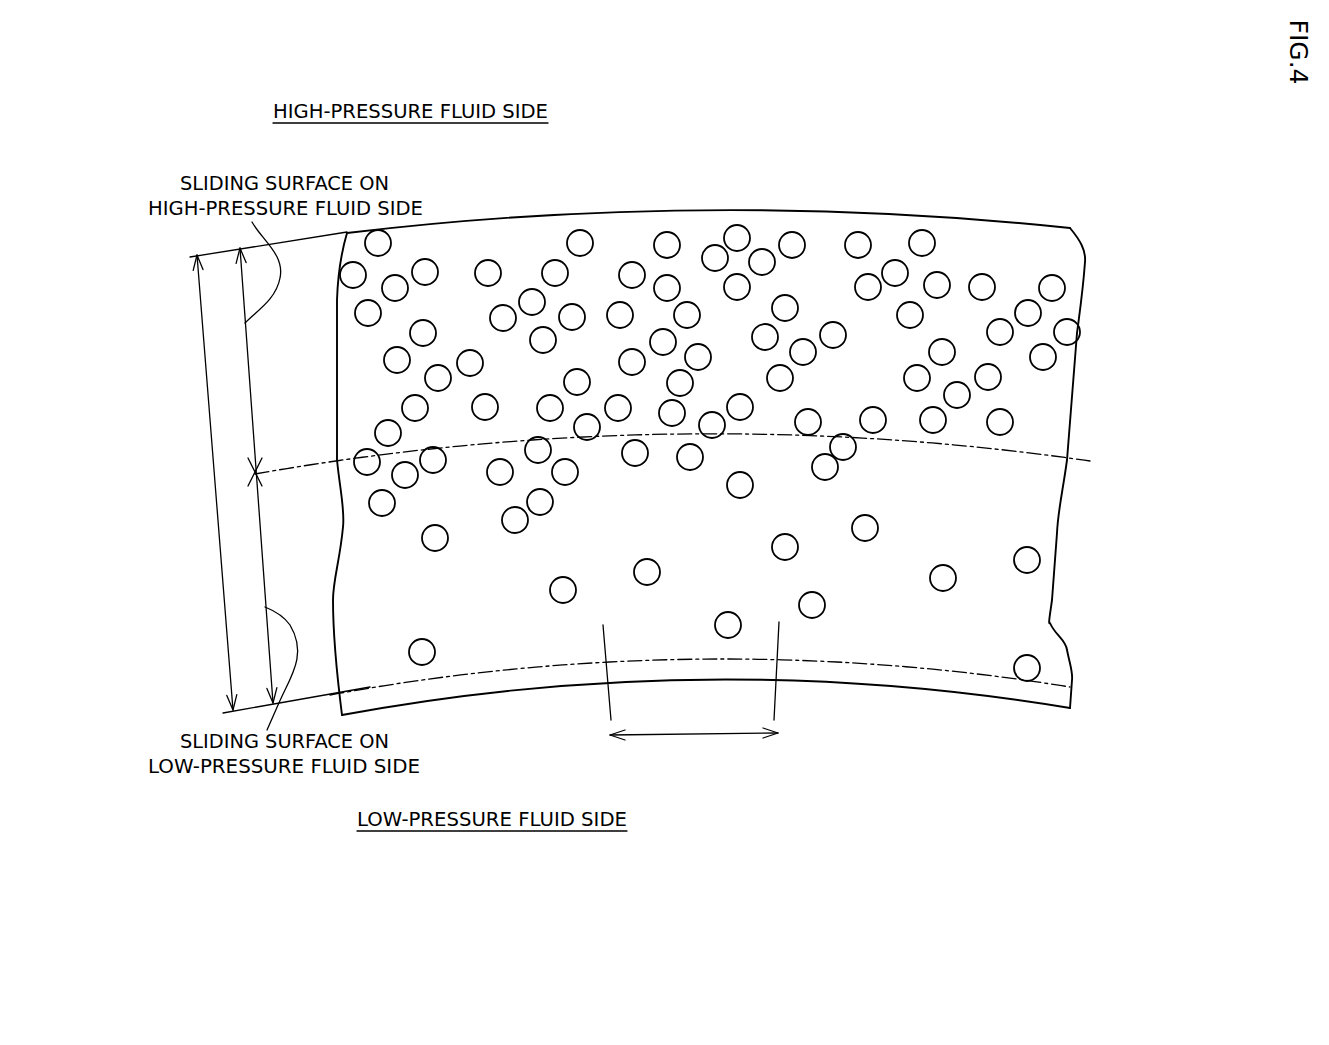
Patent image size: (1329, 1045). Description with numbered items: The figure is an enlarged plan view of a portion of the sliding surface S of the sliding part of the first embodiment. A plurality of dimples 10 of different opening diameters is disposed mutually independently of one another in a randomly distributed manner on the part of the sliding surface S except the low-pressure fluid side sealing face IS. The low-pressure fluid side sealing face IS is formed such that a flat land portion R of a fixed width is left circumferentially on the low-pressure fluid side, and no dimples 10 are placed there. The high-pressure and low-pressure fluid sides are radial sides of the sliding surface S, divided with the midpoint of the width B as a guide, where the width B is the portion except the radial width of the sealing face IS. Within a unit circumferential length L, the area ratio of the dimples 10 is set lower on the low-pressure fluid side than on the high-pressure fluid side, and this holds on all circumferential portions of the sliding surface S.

The dimples 10 is at (712, 260).
The sliding surface S is at (637, 228).
The flat land portion R is at (985, 518).
The low-pressure fluid side sealing face IS is at (872, 677).
The width B is at (279, 472).
The unit circumferential length L is at (691, 681).